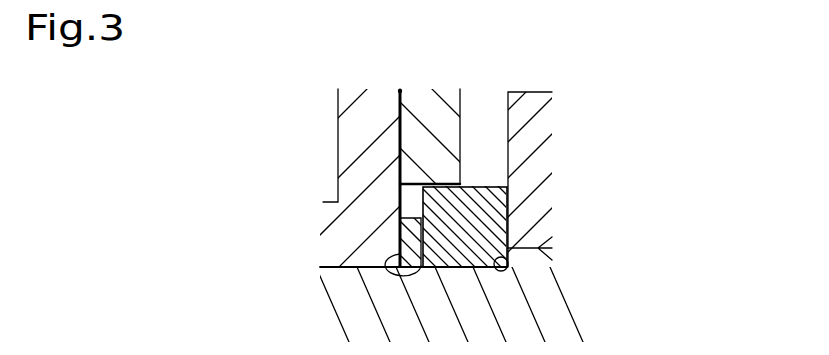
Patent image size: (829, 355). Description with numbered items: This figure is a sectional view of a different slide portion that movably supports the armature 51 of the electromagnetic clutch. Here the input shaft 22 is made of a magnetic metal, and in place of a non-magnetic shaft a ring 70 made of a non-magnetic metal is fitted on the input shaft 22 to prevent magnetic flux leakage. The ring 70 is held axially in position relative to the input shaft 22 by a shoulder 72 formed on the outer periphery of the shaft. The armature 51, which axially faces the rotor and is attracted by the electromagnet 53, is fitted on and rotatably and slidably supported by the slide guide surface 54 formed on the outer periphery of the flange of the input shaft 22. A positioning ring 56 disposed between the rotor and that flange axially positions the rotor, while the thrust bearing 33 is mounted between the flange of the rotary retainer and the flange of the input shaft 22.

The input shaft 22 is at (337, 297).
The thrust bearing 33 is at (535, 173).
The armature 51 is at (400, 117).
The electromagnet 53 is at (308, 212).
The slide guide surface 54 is at (478, 187).
The positioning ring 56 is at (408, 240).
The ring made of a non-magnetic metal 70 is at (485, 209).
The shoulder 72 is at (500, 272).